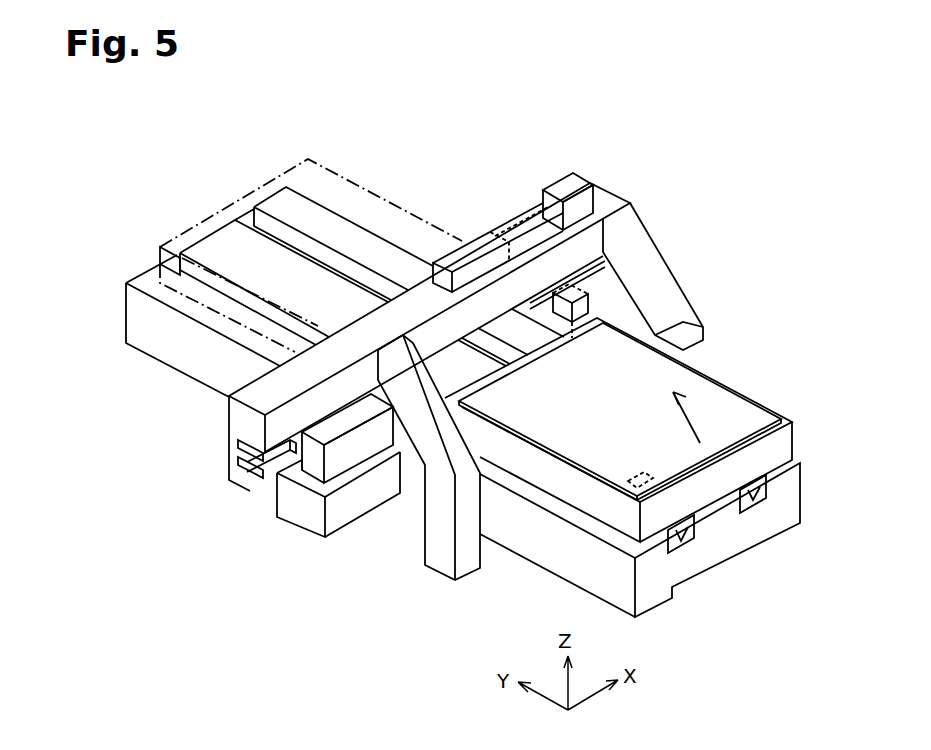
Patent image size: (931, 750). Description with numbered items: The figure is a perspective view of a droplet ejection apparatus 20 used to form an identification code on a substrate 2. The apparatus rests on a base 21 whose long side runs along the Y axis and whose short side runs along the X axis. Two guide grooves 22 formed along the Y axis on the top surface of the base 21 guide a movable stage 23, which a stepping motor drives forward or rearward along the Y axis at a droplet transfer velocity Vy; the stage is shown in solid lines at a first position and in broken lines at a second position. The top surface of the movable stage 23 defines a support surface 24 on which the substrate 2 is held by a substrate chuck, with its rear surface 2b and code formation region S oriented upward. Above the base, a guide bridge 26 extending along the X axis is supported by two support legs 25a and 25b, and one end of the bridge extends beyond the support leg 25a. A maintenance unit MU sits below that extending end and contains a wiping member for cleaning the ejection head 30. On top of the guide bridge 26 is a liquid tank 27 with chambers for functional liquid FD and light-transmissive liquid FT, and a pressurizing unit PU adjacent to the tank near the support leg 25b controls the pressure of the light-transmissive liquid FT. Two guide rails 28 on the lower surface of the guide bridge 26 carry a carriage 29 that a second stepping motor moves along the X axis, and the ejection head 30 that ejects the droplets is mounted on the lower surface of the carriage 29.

The substrate 2 is at (620, 424).
The rear surface 2b is at (563, 408).
The droplet ejection apparatus 20 is at (758, 210).
The base 21 is at (802, 494).
The guide grooves 22 is at (752, 497).
The movable stage 23 is at (358, 184).
The support surface 24 is at (784, 418).
The support leg 25a is at (428, 531).
The support leg 25b is at (668, 272).
The guide bridge 26 is at (614, 196).
The liquid tank 27 is at (442, 278).
The guide rails 28 is at (244, 462).
The carriage 29 is at (354, 450).
The ejection head 30 is at (298, 486).
The code formation region S is at (648, 476).
The droplet transfer velocity Vy is at (690, 419).
The functional liquid FD is at (477, 212).
The light-transmissive liquid FT is at (510, 218).
The pressurizing unit PU is at (564, 186).
The maintenance unit MU is at (347, 522).